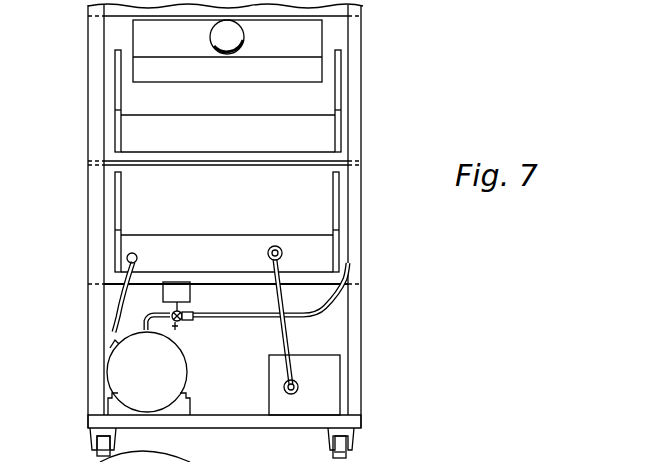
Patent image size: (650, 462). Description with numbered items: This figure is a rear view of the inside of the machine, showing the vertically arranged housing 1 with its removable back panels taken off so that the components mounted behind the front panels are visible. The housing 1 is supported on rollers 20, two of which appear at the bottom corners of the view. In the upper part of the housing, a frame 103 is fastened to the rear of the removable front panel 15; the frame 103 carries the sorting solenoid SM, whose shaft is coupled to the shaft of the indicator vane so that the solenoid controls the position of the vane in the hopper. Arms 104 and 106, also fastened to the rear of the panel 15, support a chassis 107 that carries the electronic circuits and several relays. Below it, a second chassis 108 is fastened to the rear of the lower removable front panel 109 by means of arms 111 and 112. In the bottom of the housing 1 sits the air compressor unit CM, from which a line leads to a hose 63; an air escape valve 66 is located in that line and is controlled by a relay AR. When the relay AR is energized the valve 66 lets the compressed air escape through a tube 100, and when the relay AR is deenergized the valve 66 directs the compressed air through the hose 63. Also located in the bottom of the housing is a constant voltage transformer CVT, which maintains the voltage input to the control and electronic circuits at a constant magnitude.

The housing 1 is at (76, 74).
The front panel 15 is at (108, 123).
The rollers 20 is at (94, 443).
The hose 63 is at (234, 320).
The air escape valve 66 is at (192, 321).
The tube 100 is at (177, 327).
The frame 103 is at (294, 47).
The arm 104 is at (112, 84).
The arm 106 is at (340, 80).
The chassis 107 is at (248, 120).
The chassis 108 is at (232, 236).
The front panel 109 is at (110, 183).
The arm 111 is at (114, 205).
The arm 112 is at (340, 205).
The sorting solenoid SM is at (226, 55).
The relay AR is at (163, 291).
The air compressor unit CM is at (148, 373).
The constant voltage transformer CVT is at (304, 385).